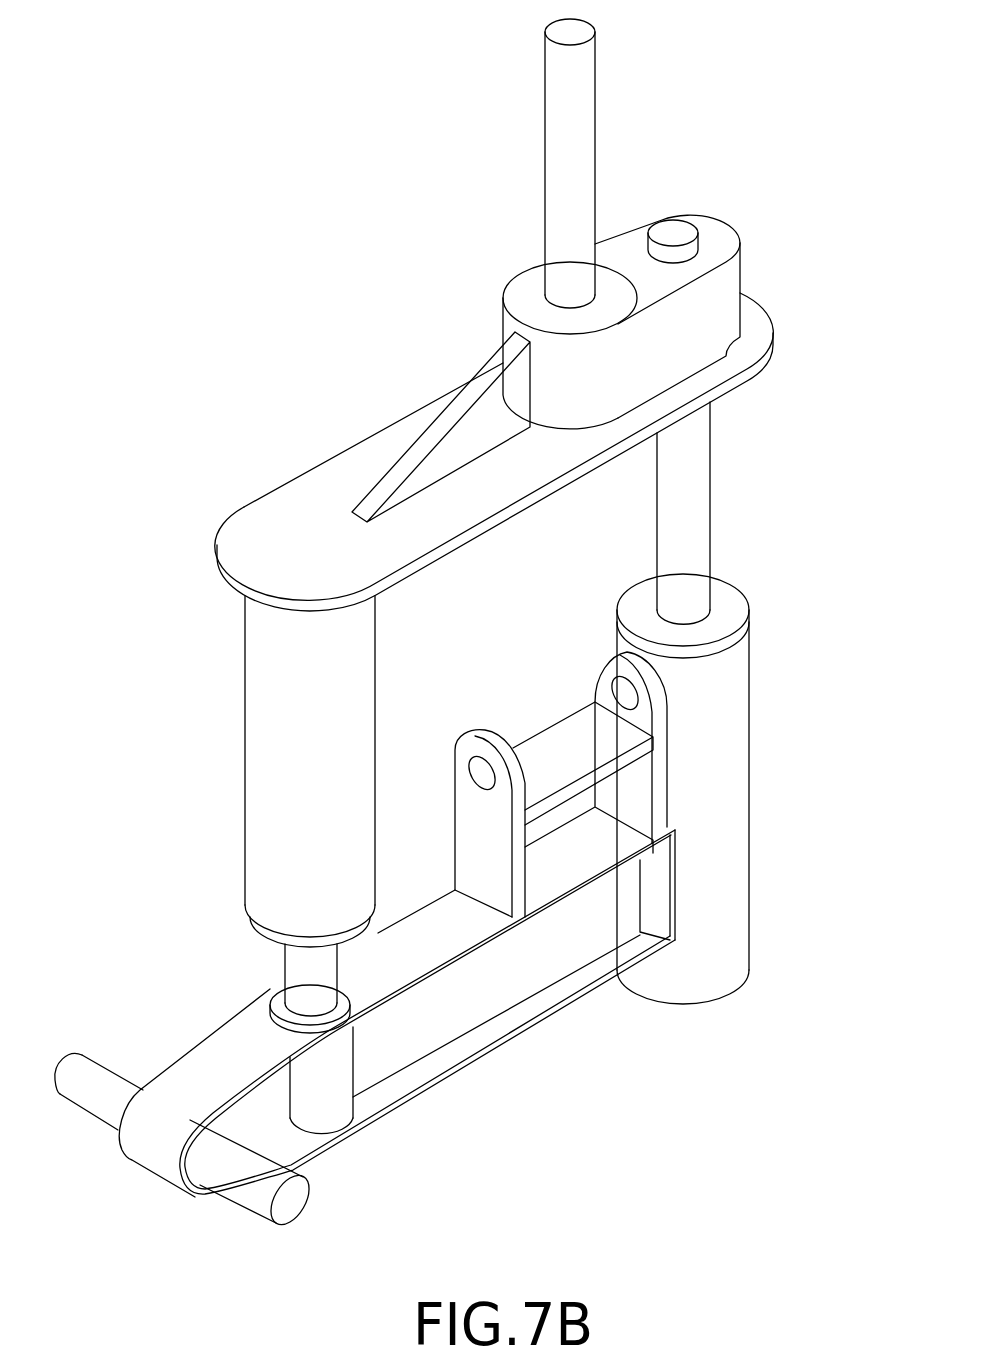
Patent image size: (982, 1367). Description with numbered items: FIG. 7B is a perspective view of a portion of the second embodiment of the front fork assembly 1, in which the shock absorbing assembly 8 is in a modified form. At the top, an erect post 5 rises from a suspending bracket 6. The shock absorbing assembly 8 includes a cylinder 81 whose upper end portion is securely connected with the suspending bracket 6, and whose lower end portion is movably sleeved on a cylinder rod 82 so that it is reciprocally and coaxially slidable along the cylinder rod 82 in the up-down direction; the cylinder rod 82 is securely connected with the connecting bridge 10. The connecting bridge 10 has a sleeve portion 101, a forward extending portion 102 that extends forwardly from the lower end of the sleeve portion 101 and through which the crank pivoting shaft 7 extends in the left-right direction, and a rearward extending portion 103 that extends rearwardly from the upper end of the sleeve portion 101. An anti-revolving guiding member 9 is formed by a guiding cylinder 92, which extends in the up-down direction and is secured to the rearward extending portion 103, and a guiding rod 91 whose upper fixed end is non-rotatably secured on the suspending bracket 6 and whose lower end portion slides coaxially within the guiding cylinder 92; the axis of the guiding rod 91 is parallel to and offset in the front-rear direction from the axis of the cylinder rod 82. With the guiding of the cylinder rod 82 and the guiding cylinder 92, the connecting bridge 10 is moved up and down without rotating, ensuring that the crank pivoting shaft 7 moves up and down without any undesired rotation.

The front fork assembly 1 is at (381, 293).
The erect post 5 is at (585, 110).
The suspending bracket 6 is at (345, 453).
The crank pivoting shaft 7 is at (290, 1210).
The shock absorbing assembly 8 is at (234, 694).
The cylinder 81 is at (290, 835).
The cylinder rod 82 is at (300, 977).
The anti-revolving guiding member 9 is at (760, 749).
The guiding rod 91 is at (695, 478).
The guiding cylinder 92 is at (740, 860).
The connecting bridge 10 is at (470, 1065).
The sleeve portion 101 is at (330, 1110).
The forward extending portion 102 is at (160, 1160).
The rearward extending portion 103 is at (500, 865).